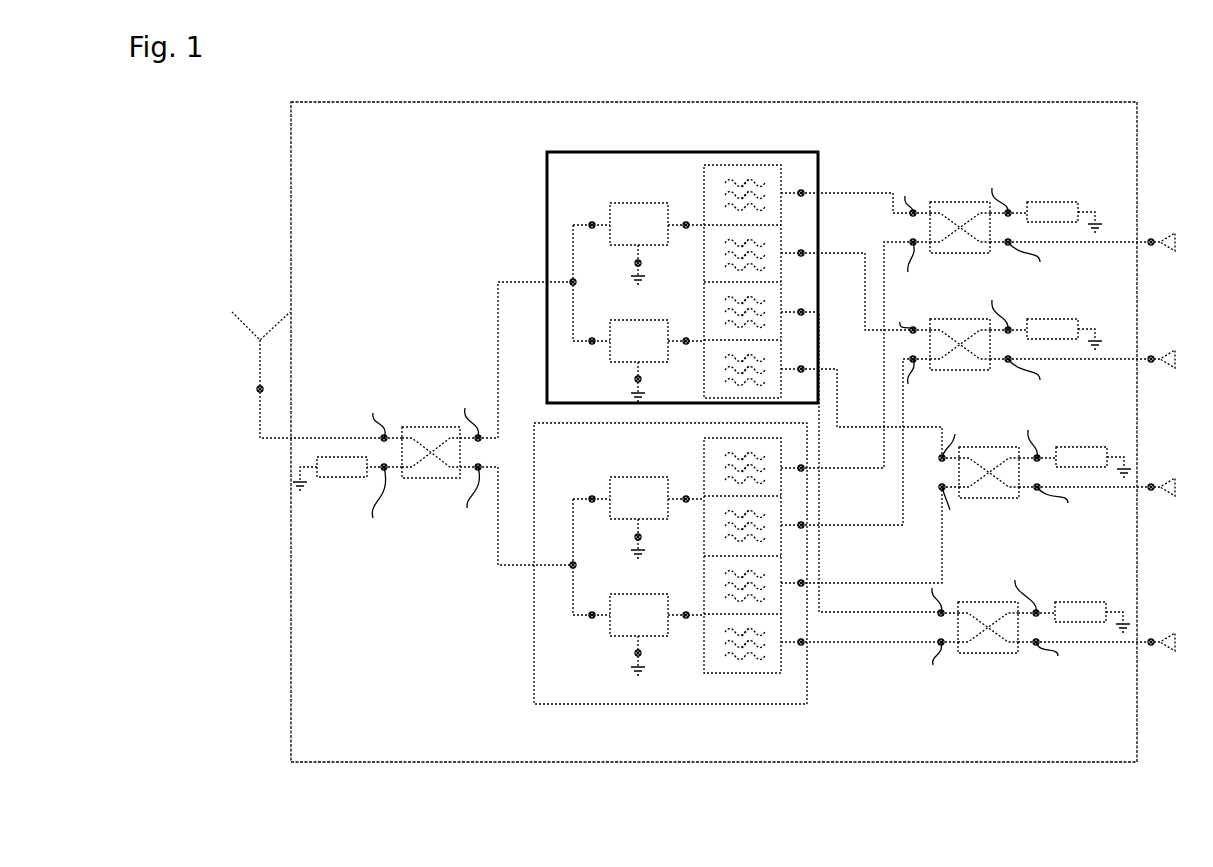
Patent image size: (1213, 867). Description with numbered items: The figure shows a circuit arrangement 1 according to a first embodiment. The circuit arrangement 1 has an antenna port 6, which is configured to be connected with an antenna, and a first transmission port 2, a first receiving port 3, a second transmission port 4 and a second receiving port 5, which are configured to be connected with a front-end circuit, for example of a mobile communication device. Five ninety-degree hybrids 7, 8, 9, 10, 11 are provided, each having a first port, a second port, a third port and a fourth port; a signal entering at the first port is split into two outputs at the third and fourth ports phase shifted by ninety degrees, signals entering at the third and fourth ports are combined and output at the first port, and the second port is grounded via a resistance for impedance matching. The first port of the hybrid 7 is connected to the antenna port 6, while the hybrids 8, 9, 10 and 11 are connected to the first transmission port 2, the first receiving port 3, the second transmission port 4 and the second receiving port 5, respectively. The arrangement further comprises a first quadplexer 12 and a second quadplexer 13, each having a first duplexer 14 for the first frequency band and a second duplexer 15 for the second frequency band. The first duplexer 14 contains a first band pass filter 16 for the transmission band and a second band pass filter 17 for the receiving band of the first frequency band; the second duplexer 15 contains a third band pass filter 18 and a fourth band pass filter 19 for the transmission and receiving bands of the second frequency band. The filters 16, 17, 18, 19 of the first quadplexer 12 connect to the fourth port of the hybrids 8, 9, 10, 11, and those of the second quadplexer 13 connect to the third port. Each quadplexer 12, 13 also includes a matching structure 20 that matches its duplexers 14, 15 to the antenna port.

The circuit arrangement 1 is at (383, 84).
The first transmission port 2 is at (1137, 242).
The first receiving port 3 is at (1137, 359).
The second transmission port 4 is at (1137, 487).
The second receiving port 5 is at (1137, 642).
The antenna port 6 is at (291, 438).
The 90 degree hybrid 7 is at (438, 430).
The 90 degree hybrid 8 is at (967, 215).
The 90 degree hybrid 9 is at (967, 333).
The 90 degree hybrid 10 is at (993, 460).
The 90 degree hybrid 11 is at (990, 610).
The first quadplexer 12 is at (568, 173).
The second quadplexer 13 is at (557, 674).
The first duplexer 14 is at (895, 62).
The second duplexer 15 is at (643, 62).
The first band pass filter 16 is at (764, 173).
The second band pass filter 17 is at (775, 240).
The third band pass filter 18 is at (720, 295).
The fourth band pass filter 19 is at (722, 358).
The matching structure 20 is at (633, 335).